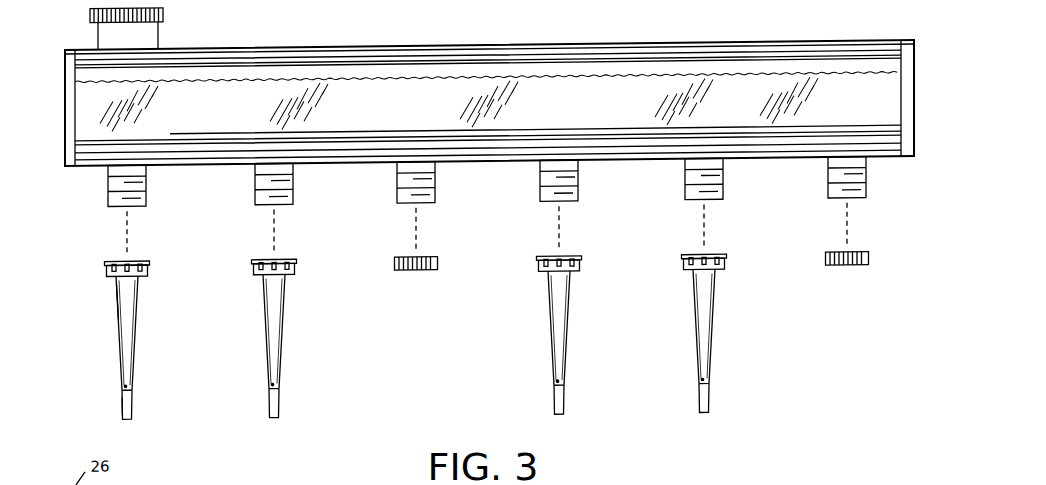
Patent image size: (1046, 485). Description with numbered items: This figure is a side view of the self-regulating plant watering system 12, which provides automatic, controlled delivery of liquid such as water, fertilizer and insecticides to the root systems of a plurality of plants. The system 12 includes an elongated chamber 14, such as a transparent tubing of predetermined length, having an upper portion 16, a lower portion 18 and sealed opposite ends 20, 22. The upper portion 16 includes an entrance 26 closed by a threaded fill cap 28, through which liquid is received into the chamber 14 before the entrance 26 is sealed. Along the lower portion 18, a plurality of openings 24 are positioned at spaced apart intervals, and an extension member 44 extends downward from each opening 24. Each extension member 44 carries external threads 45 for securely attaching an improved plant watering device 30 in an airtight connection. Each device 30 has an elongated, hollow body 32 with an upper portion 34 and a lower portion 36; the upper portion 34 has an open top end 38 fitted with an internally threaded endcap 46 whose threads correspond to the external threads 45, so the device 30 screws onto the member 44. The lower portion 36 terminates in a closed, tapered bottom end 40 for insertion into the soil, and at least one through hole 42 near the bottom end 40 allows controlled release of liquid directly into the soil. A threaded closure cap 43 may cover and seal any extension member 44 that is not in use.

The self-regulating plant watering system 12 is at (586, 32).
The elongated chamber 14 is at (535, 47).
The upper portion 16 is at (227, 70).
The lower portion 18 is at (376, 167).
The opposite end 20 is at (65, 87).
The opposite end 22 is at (914, 77).
The openings 24 is at (108, 168).
The entrance 26 is at (147, 34).
The threaded fill cap 28 is at (164, 13).
The improved plant watering device 30 is at (112, 352).
The elongated, hollow body 32 is at (136, 329).
The upper portion 34 is at (116, 294).
The lower portion 36 is at (120, 394).
The open top end 38 is at (133, 277).
The closed, tapered bottom end 40 is at (132, 402).
The through hole 42 is at (129, 389).
The nozzle closure cap 43 is at (416, 275).
The extension member 44 is at (133, 209).
The external threads 45 is at (146, 191).
The internally threaded endcap 46 is at (107, 266).